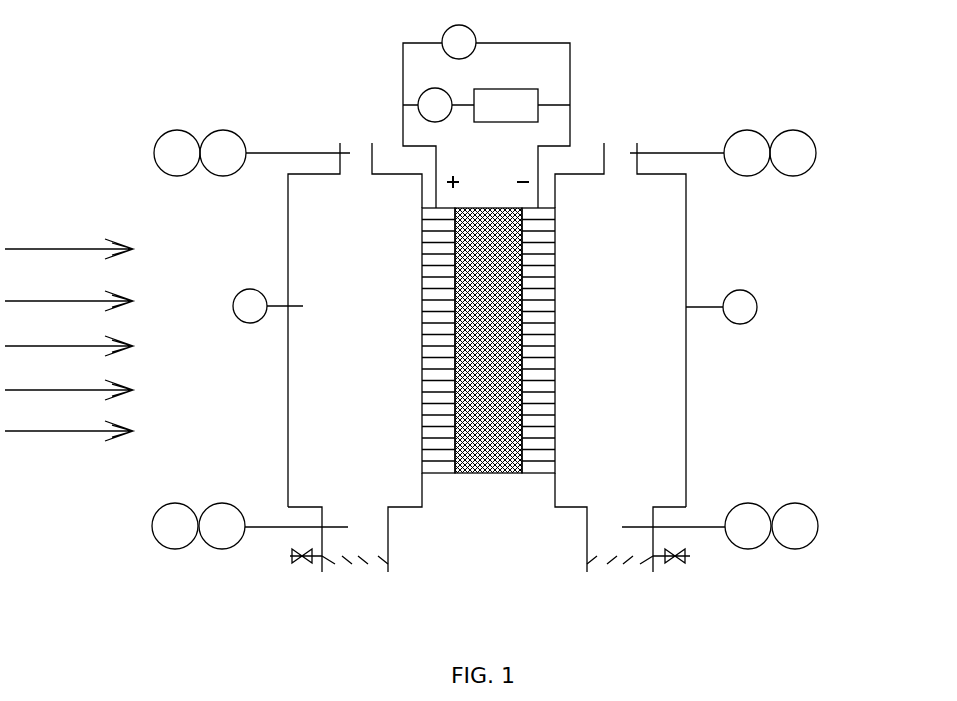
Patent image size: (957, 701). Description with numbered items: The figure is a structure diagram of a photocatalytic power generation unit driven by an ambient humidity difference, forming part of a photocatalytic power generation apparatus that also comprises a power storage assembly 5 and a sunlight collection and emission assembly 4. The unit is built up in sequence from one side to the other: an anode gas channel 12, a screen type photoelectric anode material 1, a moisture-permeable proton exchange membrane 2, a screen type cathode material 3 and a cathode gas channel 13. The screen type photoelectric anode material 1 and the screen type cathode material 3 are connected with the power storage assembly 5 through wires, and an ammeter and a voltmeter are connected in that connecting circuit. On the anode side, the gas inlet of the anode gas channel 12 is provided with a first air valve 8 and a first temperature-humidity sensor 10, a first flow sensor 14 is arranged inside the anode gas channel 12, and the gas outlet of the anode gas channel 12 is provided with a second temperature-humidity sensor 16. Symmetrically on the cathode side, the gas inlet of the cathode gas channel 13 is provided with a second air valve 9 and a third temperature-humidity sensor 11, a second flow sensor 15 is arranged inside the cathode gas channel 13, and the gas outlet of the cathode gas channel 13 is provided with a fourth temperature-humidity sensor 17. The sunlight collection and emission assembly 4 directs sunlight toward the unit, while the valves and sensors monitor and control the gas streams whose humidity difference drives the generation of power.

The screen type photoelectric anode material 1 is at (443, 473).
The moisture-permeable proton exchange membrane 2 is at (492, 473).
The screen type cathode material 3 is at (540, 473).
The sunlight collection and emission assembly 4 is at (69, 328).
The power storage assembly 5 is at (486, 116).
The first air valve 8 is at (300, 555).
The second air valve 9 is at (683, 558).
The first temperature-humidity sensor 10 is at (180, 547).
The third temperature-humidity sensor 11 is at (790, 548).
The anode gas channel 12 is at (288, 403).
The cathode gas channel 13 is at (686, 403).
The first flow sensor 14 is at (234, 291).
The second flow sensor 15 is at (752, 298).
The second temperature-humidity sensor 16 is at (220, 130).
The fourth temperature-humidity sensor 17 is at (748, 132).